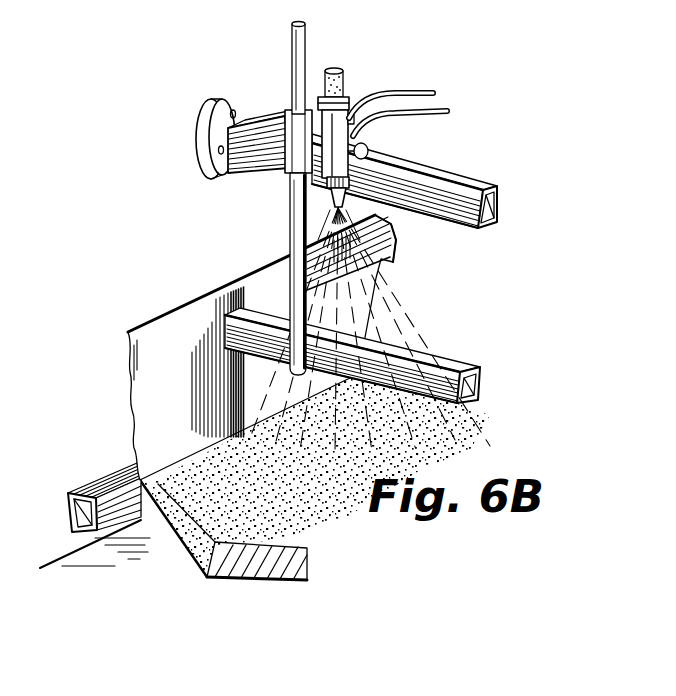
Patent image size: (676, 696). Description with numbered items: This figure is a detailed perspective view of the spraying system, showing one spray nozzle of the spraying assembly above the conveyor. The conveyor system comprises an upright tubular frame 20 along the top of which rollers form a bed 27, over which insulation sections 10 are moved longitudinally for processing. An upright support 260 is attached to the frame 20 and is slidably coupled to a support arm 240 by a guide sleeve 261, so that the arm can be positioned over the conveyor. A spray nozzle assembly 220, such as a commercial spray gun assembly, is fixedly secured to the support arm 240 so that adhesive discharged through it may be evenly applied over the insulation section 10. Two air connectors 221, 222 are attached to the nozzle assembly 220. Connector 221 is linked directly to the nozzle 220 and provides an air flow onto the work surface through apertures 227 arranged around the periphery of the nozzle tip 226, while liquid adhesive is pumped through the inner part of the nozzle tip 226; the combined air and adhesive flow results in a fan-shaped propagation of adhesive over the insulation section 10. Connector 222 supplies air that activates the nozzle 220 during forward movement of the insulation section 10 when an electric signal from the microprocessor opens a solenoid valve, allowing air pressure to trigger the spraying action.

The insulation section 10 is at (254, 579).
The frame 20 is at (95, 487).
The bed 27 is at (148, 352).
The spray nozzle assembly 220 is at (344, 76).
The air connector 221 is at (434, 93).
The air connector 222 is at (447, 112).
The nozzle tip 226 is at (350, 200).
The apertures 227 is at (323, 203).
The support arm 240 is at (487, 178).
The upright support 260 is at (304, 36).
The guide sleeve 261 is at (278, 115).